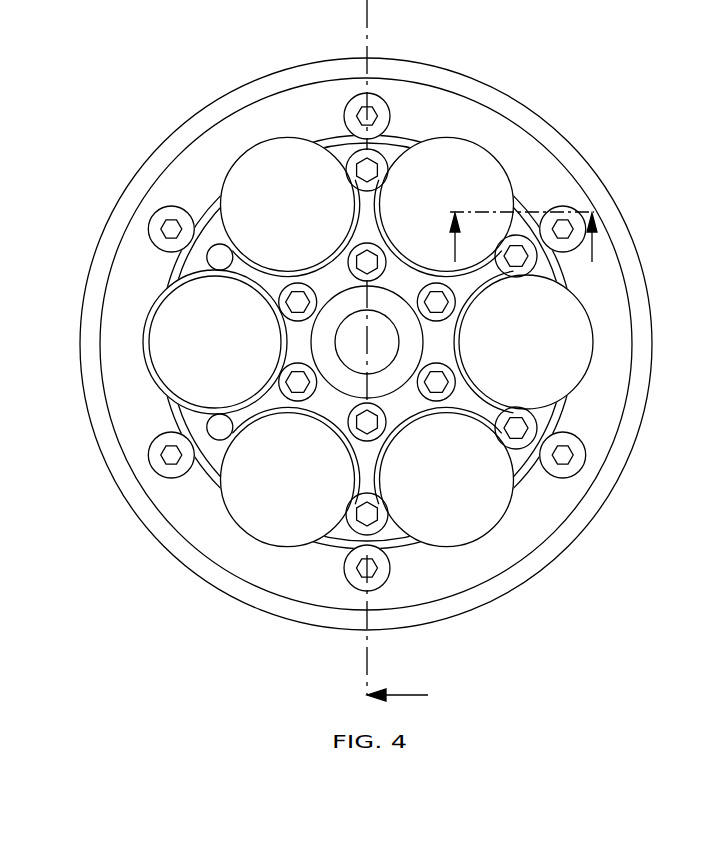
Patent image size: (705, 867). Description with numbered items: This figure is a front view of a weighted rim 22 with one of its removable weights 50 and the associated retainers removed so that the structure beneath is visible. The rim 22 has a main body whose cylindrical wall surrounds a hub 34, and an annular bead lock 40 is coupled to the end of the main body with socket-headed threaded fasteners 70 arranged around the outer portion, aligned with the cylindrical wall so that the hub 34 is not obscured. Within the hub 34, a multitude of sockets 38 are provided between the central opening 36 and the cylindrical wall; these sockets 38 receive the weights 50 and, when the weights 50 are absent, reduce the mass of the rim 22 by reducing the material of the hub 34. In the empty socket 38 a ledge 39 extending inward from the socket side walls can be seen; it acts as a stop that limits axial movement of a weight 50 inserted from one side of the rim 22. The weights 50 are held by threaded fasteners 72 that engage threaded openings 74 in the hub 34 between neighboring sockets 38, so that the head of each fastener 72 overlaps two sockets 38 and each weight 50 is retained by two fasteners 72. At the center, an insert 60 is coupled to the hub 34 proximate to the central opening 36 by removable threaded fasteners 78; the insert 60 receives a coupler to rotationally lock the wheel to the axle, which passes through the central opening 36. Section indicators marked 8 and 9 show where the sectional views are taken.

The rim 22 is at (582, 78).
The bead locks 40 is at (612, 291).
The socket-headed threaded fasteners 70 is at (569, 458).
The threaded fasteners 72 is at (376, 161).
The threaded openings 74 is at (207, 259).
The removable threaded fasteners 78 is at (356, 256).
The central opening 36 is at (398, 390).
The central insert 60 is at (413, 348).
The removable weights 50 is at (262, 168).
The ledge 39 is at (150, 306).
The hub 34 is at (297, 340).
The sockets 38 is at (176, 360).
The section line 8- 8 is at (522, 237).
The section line 9 is at (397, 683).